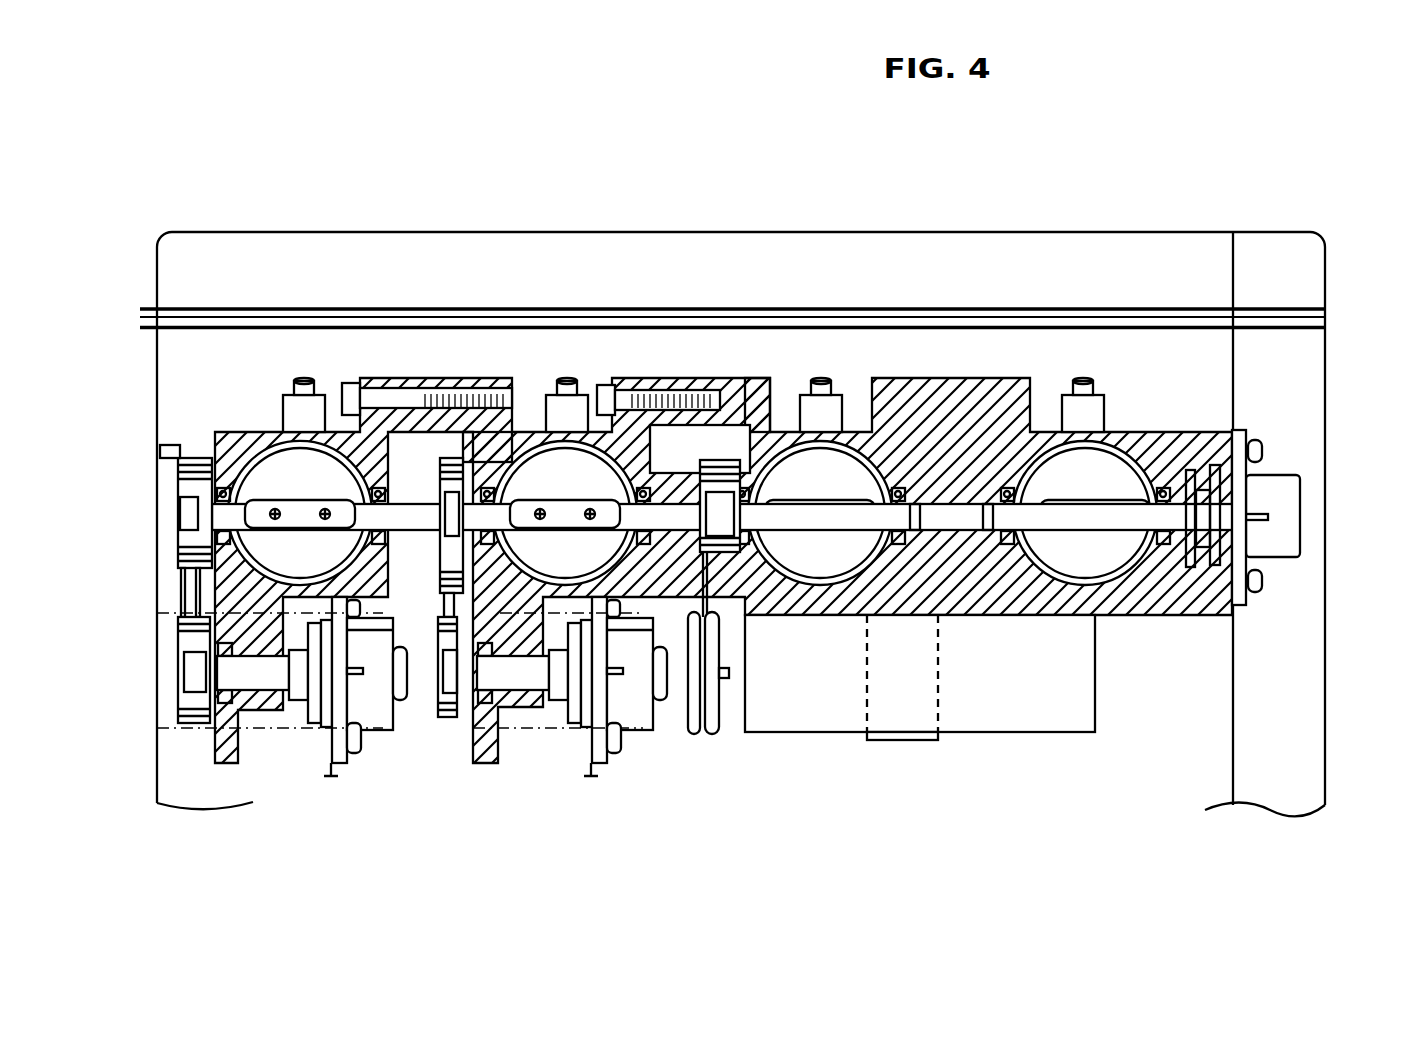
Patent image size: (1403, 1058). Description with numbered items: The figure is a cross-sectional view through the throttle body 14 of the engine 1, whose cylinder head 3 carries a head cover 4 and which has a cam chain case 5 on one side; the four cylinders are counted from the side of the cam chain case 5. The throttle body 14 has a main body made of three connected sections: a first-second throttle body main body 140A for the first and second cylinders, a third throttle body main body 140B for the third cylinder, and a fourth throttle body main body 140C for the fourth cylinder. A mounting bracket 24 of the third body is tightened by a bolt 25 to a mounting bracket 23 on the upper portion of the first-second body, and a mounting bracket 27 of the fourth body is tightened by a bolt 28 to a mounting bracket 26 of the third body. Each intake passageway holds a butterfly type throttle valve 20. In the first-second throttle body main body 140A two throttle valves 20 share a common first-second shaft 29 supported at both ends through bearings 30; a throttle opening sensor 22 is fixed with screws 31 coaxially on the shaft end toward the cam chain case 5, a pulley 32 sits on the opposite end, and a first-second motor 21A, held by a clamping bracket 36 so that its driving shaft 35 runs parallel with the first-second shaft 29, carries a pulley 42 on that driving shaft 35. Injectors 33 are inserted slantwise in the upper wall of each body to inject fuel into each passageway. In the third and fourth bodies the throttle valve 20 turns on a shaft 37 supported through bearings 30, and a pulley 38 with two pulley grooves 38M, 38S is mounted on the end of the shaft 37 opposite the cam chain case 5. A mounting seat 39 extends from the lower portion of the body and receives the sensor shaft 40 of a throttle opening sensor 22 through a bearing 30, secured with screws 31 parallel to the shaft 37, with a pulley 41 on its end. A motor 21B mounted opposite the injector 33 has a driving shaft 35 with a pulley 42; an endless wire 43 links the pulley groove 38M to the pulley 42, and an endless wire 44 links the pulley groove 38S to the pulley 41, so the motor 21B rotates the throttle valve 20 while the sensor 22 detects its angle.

The engine 1 is at (674, 208).
The cylinder head 3 is at (145, 500).
The head cover 4 is at (1157, 232).
The cam chain case 5 is at (1270, 232).
The throttle body 14 is at (945, 375).
The throttle valve 20 is at (283, 462).
The first-second motor 21A is at (990, 735).
The motor 21B is at (384, 738).
The throttle opening sensor 22 is at (380, 730).
The mounting bracket 23 is at (754, 400).
The mounting bracket 24 is at (612, 390).
The bolt 25 is at (660, 395).
The mounting bracket 26 is at (478, 392).
The mounting bracket 27 is at (362, 385).
The bolt 28 is at (397, 388).
The first-second shaft 29 is at (962, 535).
The bearing 30 is at (185, 508).
The screw 31 is at (350, 780).
The pulley 32 is at (716, 462).
The injector 33 is at (310, 378).
The driving shaft 35 is at (720, 690).
The clamping bracket 36 is at (905, 742).
The shaft 37 is at (300, 510).
The pulley 38 is at (440, 470).
The pulley groove 38M is at (492, 462).
The pulley groove 38S is at (450, 468).
The mounting seat 39 is at (262, 700).
The sensor shaft 40 is at (258, 690).
The pulley 41 is at (185, 714).
The pulley 42 is at (197, 757).
The endless wire 43 is at (181, 598).
The endless wire 44 is at (181, 570).
The first-second throttle body main body 140A is at (1040, 620).
The third throttle body main body 140B is at (590, 745).
The fourth throttle body main body 140C is at (293, 740).